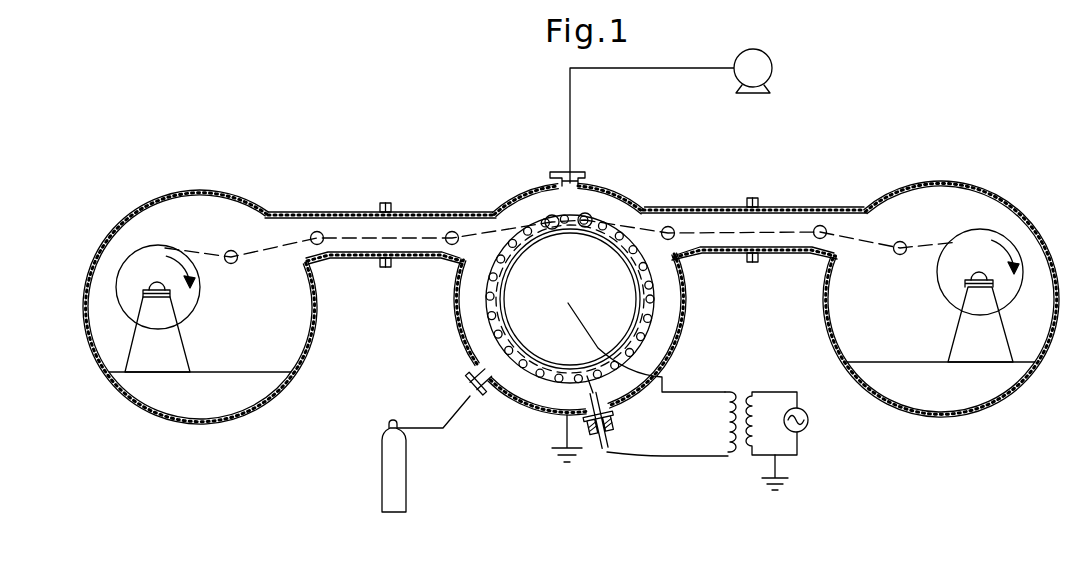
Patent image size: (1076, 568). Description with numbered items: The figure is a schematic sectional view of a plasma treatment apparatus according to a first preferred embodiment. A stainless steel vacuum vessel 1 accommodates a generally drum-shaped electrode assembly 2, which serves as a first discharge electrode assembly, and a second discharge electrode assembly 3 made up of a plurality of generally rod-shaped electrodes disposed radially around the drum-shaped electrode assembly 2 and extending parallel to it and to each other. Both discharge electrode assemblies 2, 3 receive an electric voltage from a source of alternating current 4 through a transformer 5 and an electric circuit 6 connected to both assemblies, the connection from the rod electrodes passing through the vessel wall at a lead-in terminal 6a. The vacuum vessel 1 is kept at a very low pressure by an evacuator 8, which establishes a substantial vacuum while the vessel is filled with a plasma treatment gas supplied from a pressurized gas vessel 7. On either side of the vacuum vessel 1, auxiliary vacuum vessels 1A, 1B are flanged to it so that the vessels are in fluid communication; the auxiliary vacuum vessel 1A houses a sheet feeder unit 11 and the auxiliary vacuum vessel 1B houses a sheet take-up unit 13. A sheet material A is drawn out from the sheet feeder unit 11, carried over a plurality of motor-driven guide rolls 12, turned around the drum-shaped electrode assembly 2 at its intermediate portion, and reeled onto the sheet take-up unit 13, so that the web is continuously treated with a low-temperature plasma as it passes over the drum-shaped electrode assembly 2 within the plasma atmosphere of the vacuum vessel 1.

The vacuum vessel 1 is at (516, 196).
The auxiliary vacuum vessel 1A is at (193, 191).
The auxiliary vacuum vessel 1B is at (950, 182).
The drum-shaped electrode assembly 2 is at (595, 231).
The second discharge electrode assembly 3 is at (489, 322).
The source of alternating current 4 is at (809, 417).
The transformer 5 is at (745, 396).
The electric circuit 6 is at (689, 391).
The lead-in terminal 6a is at (601, 446).
The pressurized gas vessel 7 is at (388, 443).
The evacuator 8 is at (735, 77).
The sheet feeder unit 11 is at (155, 374).
The guide rolls 12 is at (316, 231).
The sheet take-up unit 13 is at (975, 357).
The sheet material A is at (410, 237).